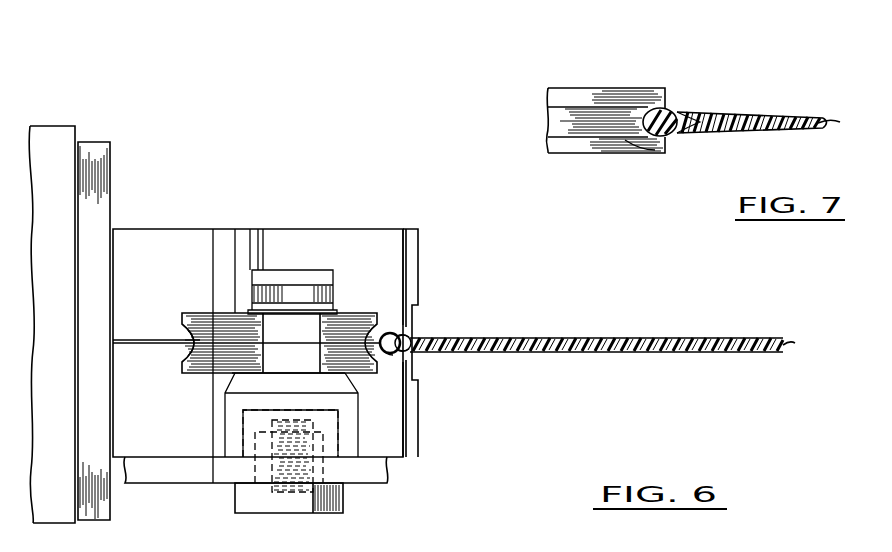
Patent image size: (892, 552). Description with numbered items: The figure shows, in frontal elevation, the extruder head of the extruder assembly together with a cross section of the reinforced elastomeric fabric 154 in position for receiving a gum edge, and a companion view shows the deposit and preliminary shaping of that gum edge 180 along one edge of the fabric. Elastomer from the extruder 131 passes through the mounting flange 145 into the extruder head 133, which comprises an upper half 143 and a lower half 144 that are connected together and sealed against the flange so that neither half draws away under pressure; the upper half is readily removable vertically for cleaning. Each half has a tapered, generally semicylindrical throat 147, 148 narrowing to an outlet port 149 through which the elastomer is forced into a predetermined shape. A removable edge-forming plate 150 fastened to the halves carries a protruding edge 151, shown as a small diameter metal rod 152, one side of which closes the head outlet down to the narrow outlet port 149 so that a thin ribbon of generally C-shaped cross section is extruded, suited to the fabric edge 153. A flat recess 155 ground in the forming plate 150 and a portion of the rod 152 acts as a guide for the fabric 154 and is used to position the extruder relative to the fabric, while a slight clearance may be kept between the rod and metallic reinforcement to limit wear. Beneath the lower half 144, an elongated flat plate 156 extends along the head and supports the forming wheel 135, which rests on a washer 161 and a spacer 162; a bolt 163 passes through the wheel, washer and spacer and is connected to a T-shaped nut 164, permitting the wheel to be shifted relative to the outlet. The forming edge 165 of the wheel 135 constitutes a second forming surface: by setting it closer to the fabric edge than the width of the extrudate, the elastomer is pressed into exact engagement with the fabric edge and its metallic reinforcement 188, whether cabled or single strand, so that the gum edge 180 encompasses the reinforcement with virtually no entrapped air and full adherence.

In FIG. 6, the extruder 131 is at (57, 137).
In FIG. 6, the mounting flange 145 is at (95, 152).
In FIG. 6, the upper half of extruder head 143 is at (155, 247).
In FIG. 6, the extruder head 133 is at (303, 236).
In FIG. 6, the bolt 163 is at (305, 283).
In FIG. 6, the forming wheel 135 is at (224, 305).
In FIG. 7, the forming wheel 135 is at (612, 101).
In FIG. 6, the protruding edge 151 is at (340, 343).
In FIG. 6, the lower half of extruder head 144 is at (136, 364).
In FIG. 6, the forming edge 165 is at (192, 352).
In FIG. 7, the forming edge 165 is at (624, 149).
In FIG. 6, the washer 161 is at (242, 377).
In FIG. 6, the spacer 162 is at (235, 417).
In FIG. 6, the elongated flat plate 156 is at (178, 472).
In FIG. 6, the T-shaped nut 164 is at (340, 497).
In FIG. 6, the edge-forming plate 150 is at (412, 243).
In FIG. 6, the flat recess 155 is at (414, 318).
In FIG. 6, the throat of upper half 147 is at (390, 333).
In FIG. 6, the throat of lower half 148 is at (393, 358).
In FIG. 6, the fabric edge 153 is at (408, 347).
In FIG. 6, the metal rod 152 is at (407, 338).
In FIG. 6, the outlet port 149 is at (410, 352).
In FIG. 6, the reinforced elastomeric fabric 154 is at (648, 343).
In FIG. 7, the reinforced elastomeric fabric 154 is at (778, 115).
In FIG. 7, the gum edge 180 is at (668, 106).
In FIG. 7, the metallic reinforcement 188 is at (710, 130).